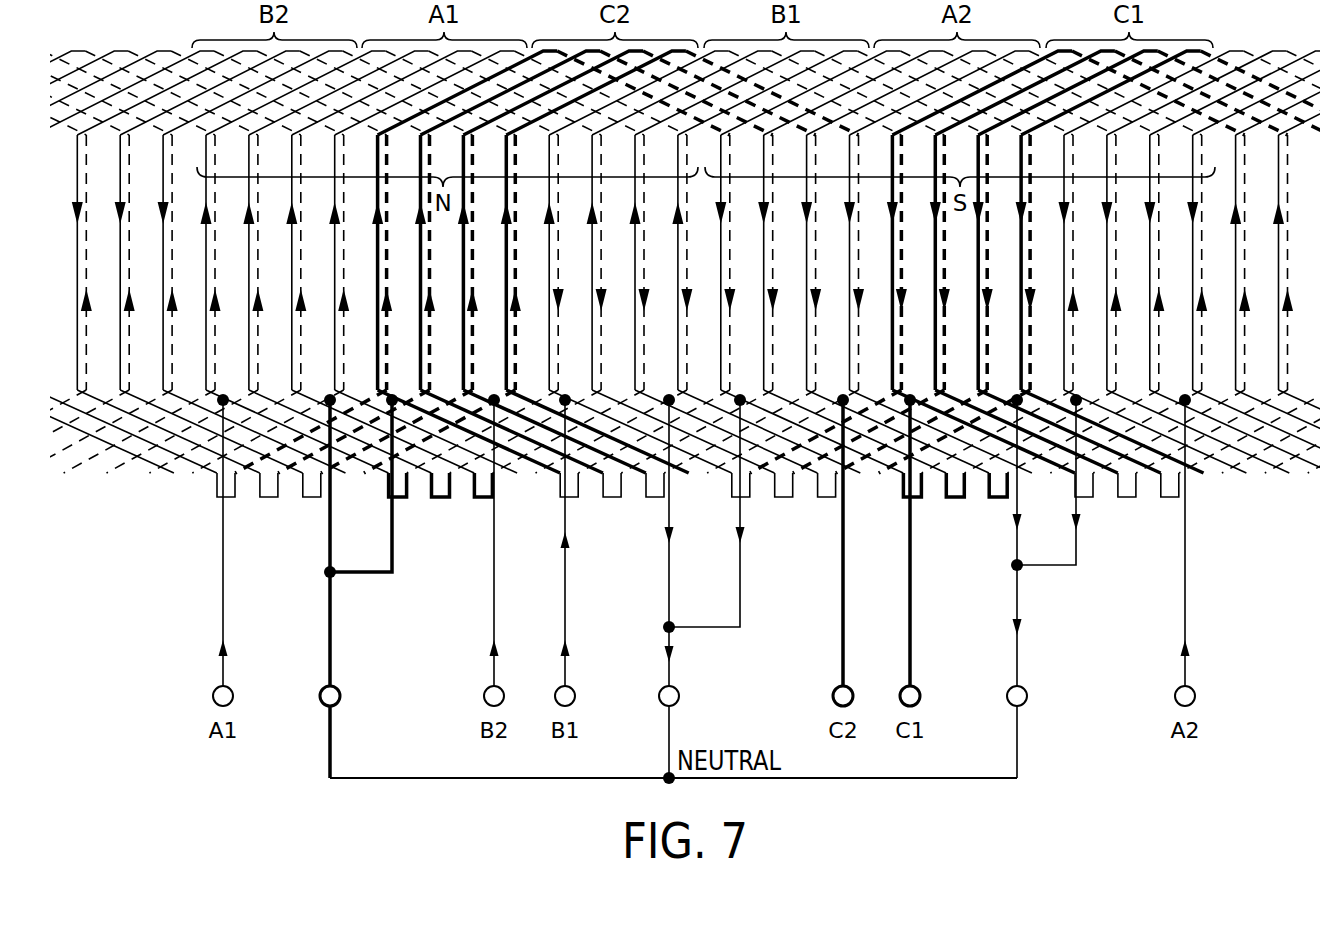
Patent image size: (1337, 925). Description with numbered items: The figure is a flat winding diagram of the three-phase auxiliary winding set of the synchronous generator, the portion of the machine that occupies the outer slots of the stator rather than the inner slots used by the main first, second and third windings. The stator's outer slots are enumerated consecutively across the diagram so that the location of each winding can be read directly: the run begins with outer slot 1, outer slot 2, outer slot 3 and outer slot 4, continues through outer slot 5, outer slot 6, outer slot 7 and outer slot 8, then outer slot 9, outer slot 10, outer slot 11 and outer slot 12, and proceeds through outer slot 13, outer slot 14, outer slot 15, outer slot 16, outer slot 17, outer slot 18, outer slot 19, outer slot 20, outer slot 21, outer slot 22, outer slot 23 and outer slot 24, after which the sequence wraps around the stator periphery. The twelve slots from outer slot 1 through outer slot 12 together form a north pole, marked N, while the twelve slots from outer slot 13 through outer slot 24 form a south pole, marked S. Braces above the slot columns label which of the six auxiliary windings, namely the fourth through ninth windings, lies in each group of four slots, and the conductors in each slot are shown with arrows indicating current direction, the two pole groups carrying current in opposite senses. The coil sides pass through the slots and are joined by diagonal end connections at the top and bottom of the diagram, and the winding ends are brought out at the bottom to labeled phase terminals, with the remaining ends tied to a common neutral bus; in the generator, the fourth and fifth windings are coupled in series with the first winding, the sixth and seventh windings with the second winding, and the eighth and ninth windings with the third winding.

The outer slot 1 is at (726, 262).
The outer slot 2 is at (768, 262).
The outer slot 3 is at (296, 262).
The outer slot 4 is at (339, 262).
The outer slot 5 is at (382, 262).
The outer slot 6 is at (425, 262).
The outer slot 7 is at (468, 262).
The outer slot 8 is at (511, 262).
The outer slot 9 is at (554, 262).
The outer slot 10 is at (597, 262).
The outer slot 11 is at (640, 262).
The outer slot 12 is at (682, 262).
The outer slot 13 is at (725, 262).
The outer slot 14 is at (768, 262).
The outer slot 15 is at (811, 262).
The outer slot 16 is at (854, 262).
The outer slot 17 is at (897, 262).
The outer slot 18 is at (940, 262).
The outer slot 19 is at (983, 262).
The outer slot 20 is at (1026, 262).
The outer slot 21 is at (1069, 262).
The outer slot 22 is at (597, 262).
The outer slot 23 is at (640, 262).
The outer slot 24 is at (683, 262).